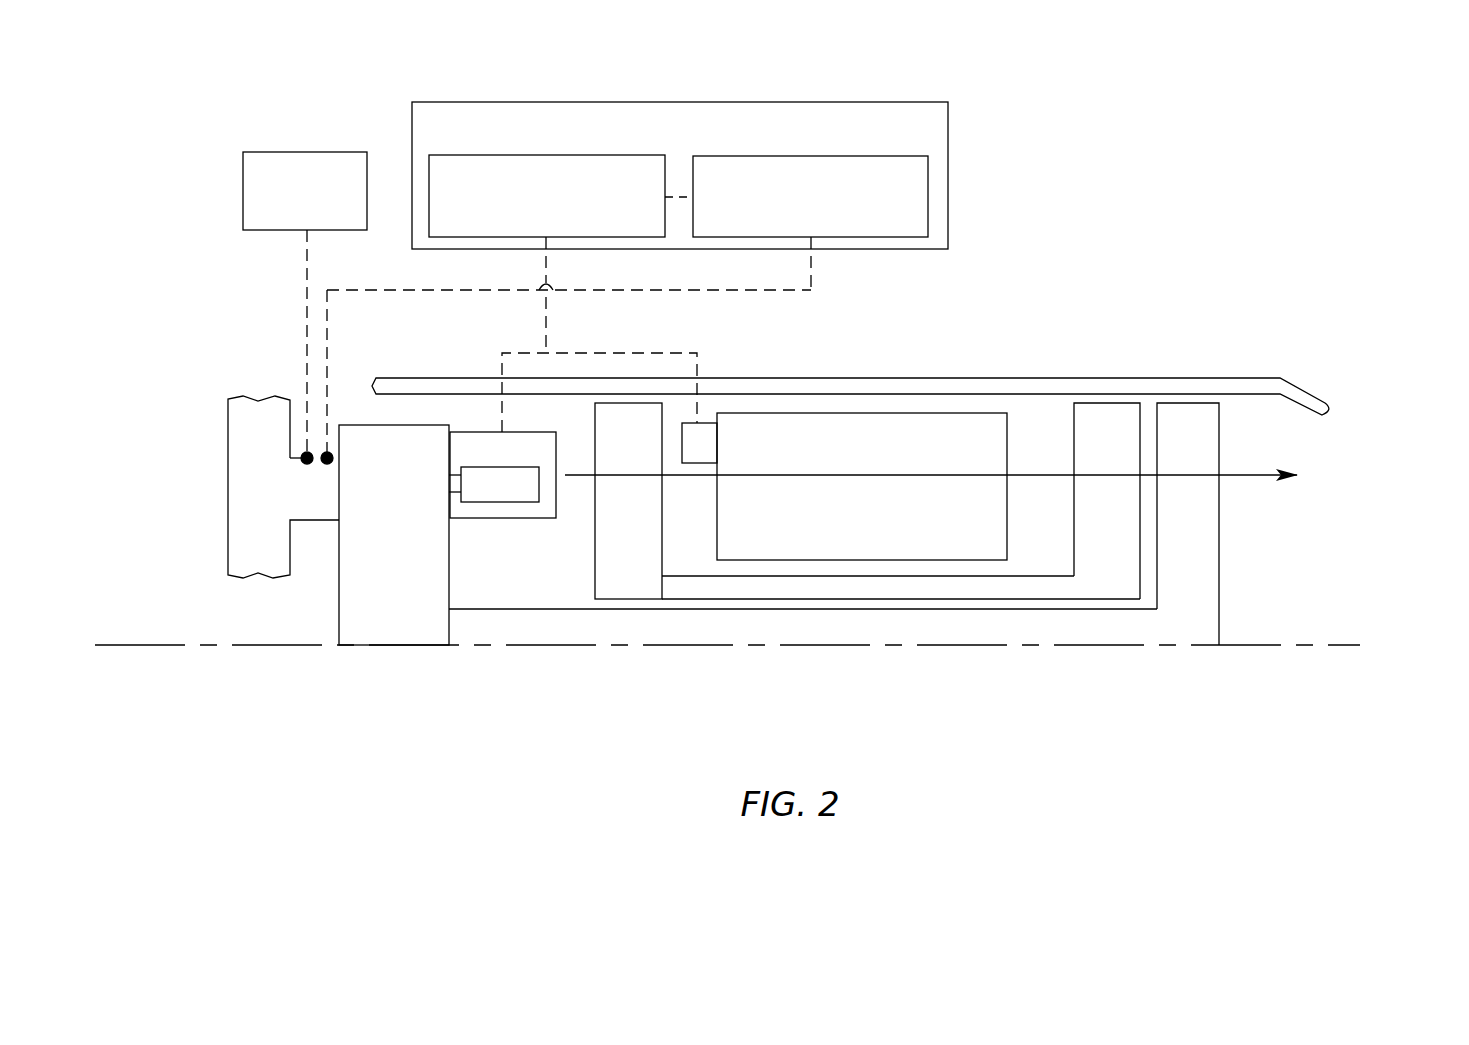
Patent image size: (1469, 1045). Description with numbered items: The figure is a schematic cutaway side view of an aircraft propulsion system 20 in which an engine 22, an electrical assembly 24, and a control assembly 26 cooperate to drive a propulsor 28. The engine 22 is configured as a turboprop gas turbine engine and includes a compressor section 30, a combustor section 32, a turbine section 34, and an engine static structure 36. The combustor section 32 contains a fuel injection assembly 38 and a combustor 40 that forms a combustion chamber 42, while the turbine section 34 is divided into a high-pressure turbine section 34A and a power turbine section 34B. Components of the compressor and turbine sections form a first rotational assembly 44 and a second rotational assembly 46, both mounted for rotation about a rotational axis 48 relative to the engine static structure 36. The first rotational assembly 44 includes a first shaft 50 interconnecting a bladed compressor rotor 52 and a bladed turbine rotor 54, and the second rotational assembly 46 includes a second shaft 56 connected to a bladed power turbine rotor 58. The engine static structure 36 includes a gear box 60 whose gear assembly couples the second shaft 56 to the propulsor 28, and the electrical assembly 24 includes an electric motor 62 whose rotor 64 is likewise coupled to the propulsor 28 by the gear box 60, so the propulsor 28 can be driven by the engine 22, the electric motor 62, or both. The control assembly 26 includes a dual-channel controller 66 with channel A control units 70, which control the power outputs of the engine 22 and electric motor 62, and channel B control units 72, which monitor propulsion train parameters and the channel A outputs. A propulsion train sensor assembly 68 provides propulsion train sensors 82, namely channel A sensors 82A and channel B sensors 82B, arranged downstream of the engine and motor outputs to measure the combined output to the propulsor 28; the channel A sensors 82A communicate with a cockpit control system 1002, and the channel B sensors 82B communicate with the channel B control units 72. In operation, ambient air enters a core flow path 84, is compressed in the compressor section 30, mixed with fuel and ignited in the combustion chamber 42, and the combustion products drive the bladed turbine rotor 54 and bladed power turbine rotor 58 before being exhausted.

The propulsion system 20 is at (1147, 168).
The engine 22 is at (888, 514).
The electrical assembly 24 is at (490, 540).
The control assembly 26 is at (722, 139).
The propulsor 28 is at (248, 437).
The compressor section 30 is at (921, 565).
The combustor section 32 is at (865, 525).
The turbine section 34 is at (1238, 585).
The high-pressure turbine section 34A is at (1060, 552).
The power turbine section 34B is at (1147, 572).
The engine static structure 36 is at (888, 385).
The fuel injection assembly 38 is at (697, 447).
The combustor 40 is at (862, 446).
The combustion chamber 42 is at (854, 459).
The first rotational assembly 44 is at (715, 587).
The second rotational assembly 46 is at (523, 622).
The rotational axis 48 is at (1355, 640).
The first shaft 50 is at (850, 588).
The bladed compressor rotor 52 is at (612, 449).
The bladed turbine rotor 54 is at (1094, 449).
The second shaft 56 is at (760, 625).
The bladed power turbine rotor 58 is at (1175, 449).
The gear box 60 is at (381, 541).
The electric motor 62 is at (478, 426).
The rotor 64 is at (487, 497).
The controller 66 is at (955, 125).
The propulsion train sensor assembly 68 is at (298, 443).
The channel A control units 70 is at (545, 155).
The channel B control units 72 is at (930, 197).
The propulsion train sensors 82 is at (287, 510).
The channel A sensors 82A is at (308, 462).
The channel B sensors 82B is at (332, 452).
The core flow path 84 is at (1258, 470).
The cockpit control system 1002 is at (283, 220).